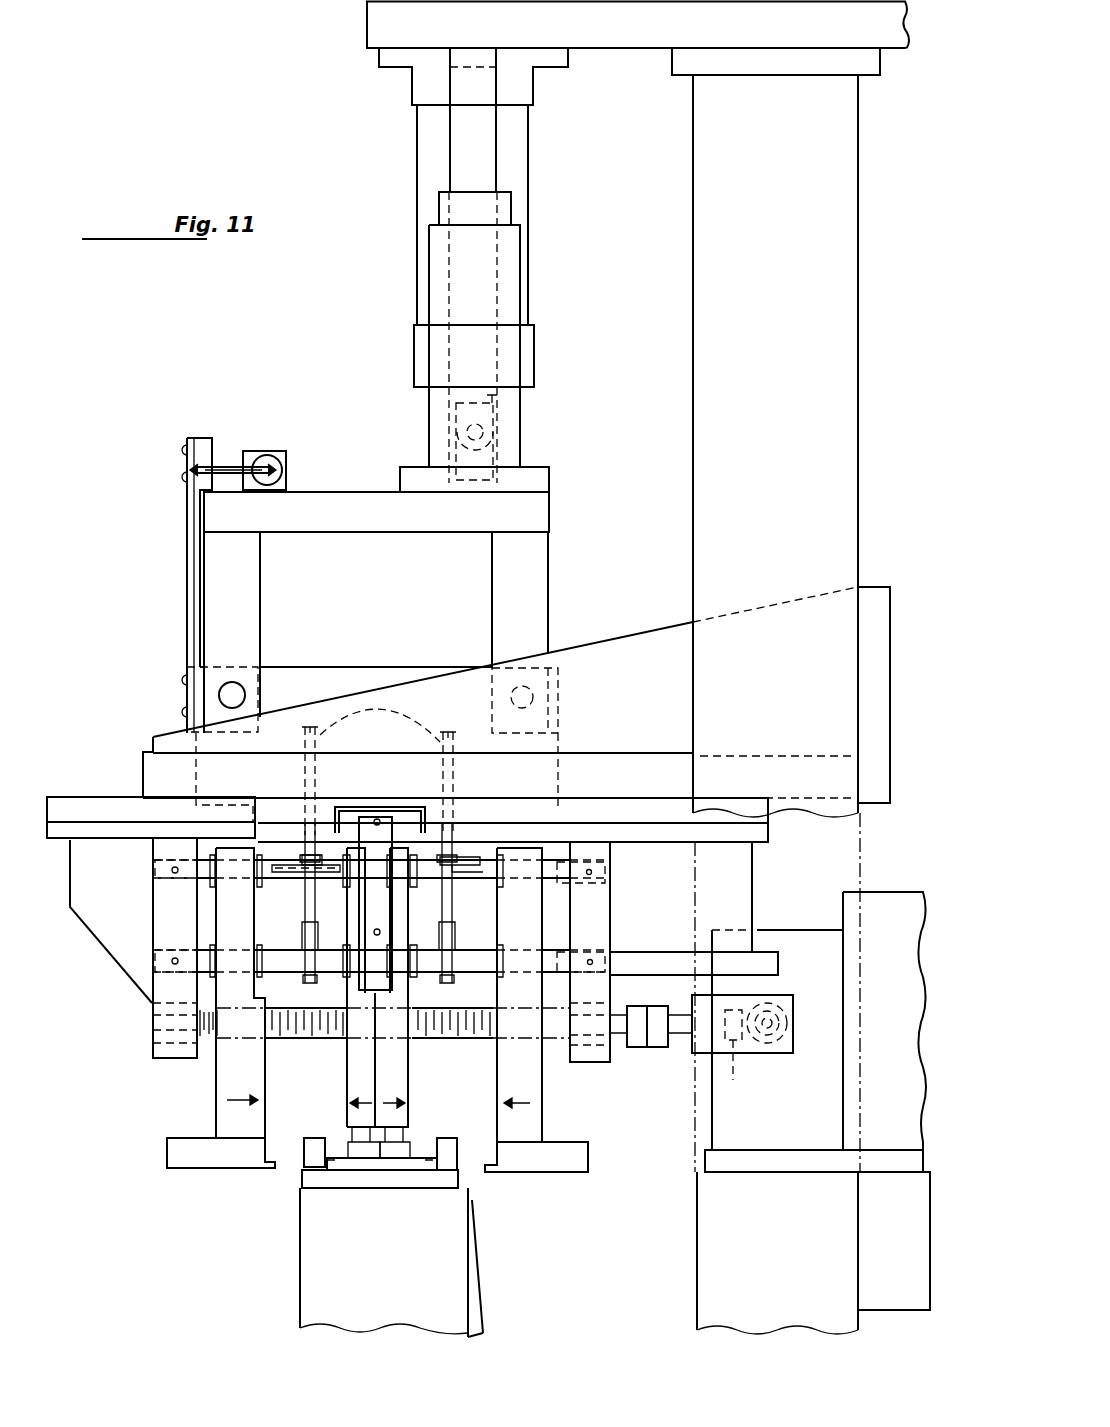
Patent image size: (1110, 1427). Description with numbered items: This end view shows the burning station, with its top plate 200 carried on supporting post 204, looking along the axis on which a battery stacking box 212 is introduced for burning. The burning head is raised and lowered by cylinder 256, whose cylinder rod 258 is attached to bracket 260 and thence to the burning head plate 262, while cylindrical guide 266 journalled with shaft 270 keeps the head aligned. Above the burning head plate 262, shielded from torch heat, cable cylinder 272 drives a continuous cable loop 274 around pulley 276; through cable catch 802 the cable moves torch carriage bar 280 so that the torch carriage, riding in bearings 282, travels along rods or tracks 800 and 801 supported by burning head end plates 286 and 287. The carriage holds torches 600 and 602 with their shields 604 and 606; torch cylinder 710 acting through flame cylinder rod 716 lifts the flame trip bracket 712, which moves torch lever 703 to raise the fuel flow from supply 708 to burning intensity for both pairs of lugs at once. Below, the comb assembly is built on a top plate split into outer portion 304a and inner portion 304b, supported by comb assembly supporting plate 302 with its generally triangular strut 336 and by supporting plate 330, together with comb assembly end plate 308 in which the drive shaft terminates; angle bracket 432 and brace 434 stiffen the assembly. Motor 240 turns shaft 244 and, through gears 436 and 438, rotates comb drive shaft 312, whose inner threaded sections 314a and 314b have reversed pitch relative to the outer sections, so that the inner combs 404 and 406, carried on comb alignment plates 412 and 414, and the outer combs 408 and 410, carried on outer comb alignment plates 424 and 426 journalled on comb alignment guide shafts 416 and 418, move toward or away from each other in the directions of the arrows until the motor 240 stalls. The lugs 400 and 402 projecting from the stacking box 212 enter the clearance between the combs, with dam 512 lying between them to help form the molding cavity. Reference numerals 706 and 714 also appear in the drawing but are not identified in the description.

The top plate 200 is at (368, 16).
The supporting post 204 is at (830, 352).
The battery stacking box 212 is at (298, 1286).
The motor 240 is at (783, 920).
The shaft 244 is at (793, 1030).
The cylinder 256 is at (422, 175).
The cylinder rod 258 is at (497, 397).
The bracket 260 is at (497, 463).
The burning head plate 262 is at (530, 512).
The cylindrical guide 266 is at (515, 432).
The shaft 270 is at (455, 124).
The cable cylinder 272 is at (270, 462).
The continuous cable loop 274 is at (220, 468).
The pulley 276 is at (235, 468).
The torch carriage bar 280 is at (190, 567).
The bearings 282 is at (198, 688).
The burning head end plate 286 is at (255, 580).
The burning head end plate 287 is at (524, 583).
The comb assembly supporting plate 302 is at (880, 603).
The outer portion of comb assembly top plate 304a is at (63, 830).
The inner portion of comb assembly top plate 304b is at (742, 835).
The comb assembly end plate 308 is at (172, 985).
The comb drive shaft 312 is at (683, 1033).
The inner comb threaded section 314a is at (417, 1018).
The inner comb threaded section 314b is at (322, 1023).
The comb assembly supporting plate 330 is at (603, 1055).
The strut 336 is at (650, 645).
The lug 400 is at (315, 1155).
The lug 402 is at (452, 1163).
The inner comb 404 is at (358, 1150).
The inner comb 406 is at (397, 1150).
The outer comb 408 is at (182, 1150).
The outer comb 410 is at (552, 1160).
The comb alignment plate 412 is at (355, 1076).
The comb alignment plate 414 is at (400, 1076).
The comb alignment guide shaft 416 is at (560, 946).
The comb alignment guide shaft 418 is at (560, 855).
The outer comb alignment plate 424 is at (235, 1067).
The outer comb alignment plate 426 is at (520, 1070).
The angle bracket 432 is at (97, 927).
The brace 434 is at (658, 958).
The gear 436 is at (737, 1060).
The gear 438 is at (796, 1003).
The dam 512 is at (355, 1165).
The torch 600 is at (312, 978).
The torch 602 is at (449, 980).
The shield 604 is at (312, 906).
The shield 606 is at (435, 915).
The torch lever 703 is at (480, 830).
The bracket 706 is at (287, 807).
The fuel gas supply 708 is at (405, 718).
The torch cylinder 710 is at (382, 835).
The flame trip bracket 712 is at (352, 805).
The wedge 714 is at (330, 678).
The flame cylinder rod 716 is at (378, 815).
The torch carriage track 800 is at (237, 690).
The torch carriage track 801 is at (530, 697).
The cable catch 802 is at (188, 445).